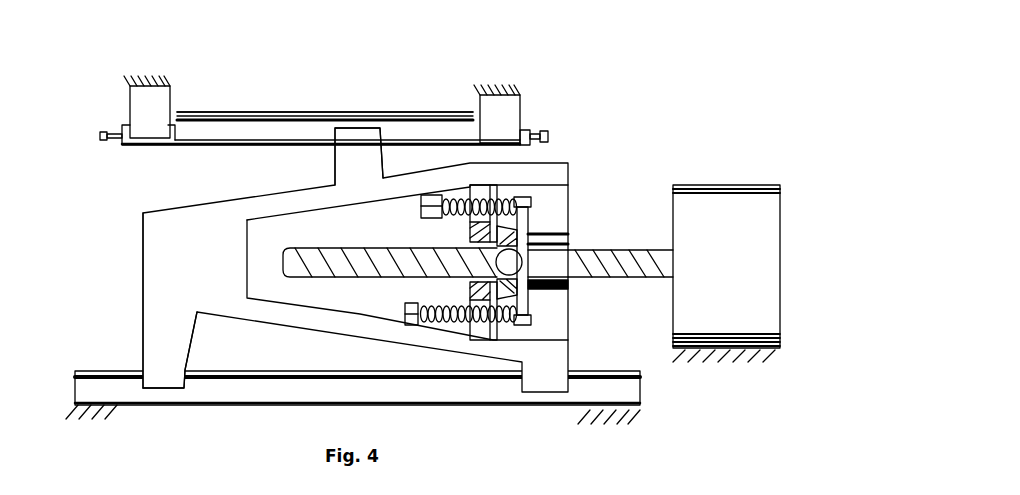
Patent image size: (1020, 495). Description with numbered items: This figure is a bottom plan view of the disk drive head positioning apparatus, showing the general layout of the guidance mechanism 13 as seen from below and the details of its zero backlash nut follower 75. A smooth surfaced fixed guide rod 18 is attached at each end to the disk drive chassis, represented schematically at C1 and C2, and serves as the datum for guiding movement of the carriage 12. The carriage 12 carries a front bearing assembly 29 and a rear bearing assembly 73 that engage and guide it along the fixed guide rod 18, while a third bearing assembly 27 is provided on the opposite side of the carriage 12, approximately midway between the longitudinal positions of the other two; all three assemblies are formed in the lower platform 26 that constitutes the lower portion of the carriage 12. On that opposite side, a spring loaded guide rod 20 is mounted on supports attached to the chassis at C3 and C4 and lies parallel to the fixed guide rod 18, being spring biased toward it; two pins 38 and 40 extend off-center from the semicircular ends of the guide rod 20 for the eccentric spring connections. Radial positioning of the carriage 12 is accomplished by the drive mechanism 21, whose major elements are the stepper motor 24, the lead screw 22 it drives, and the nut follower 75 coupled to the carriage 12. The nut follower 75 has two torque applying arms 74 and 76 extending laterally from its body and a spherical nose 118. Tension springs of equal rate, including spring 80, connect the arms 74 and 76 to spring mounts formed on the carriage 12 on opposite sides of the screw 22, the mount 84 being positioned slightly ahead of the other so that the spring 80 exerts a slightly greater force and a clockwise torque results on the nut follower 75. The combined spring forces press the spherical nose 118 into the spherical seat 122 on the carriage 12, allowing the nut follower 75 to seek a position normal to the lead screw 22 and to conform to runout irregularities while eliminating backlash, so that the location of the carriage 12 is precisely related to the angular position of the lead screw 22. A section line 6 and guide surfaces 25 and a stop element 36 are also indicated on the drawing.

The carriage 12 is at (203, 201).
The guidance mechanism 13 is at (93, 128).
The fixed guide rod 18 is at (287, 408).
The spring loaded guide rod 20 is at (226, 115).
The drive mechanism 21 is at (614, 279).
The lead screw 22 is at (590, 252).
The stepper motor 24 is at (715, 185).
The guide surface 25 is at (387, 107).
The platform 26 is at (143, 240).
The third bearing assembly 27 is at (330, 158).
The front bearing assembly 29 is at (143, 365).
The stop block 36 is at (533, 130).
The pin 38 is at (548, 139).
The pin 40 is at (112, 142).
The rear bearing assembly 73 is at (505, 207).
The torque applying arm 74 is at (531, 214).
The zero backlash nut follower 75 is at (548, 242).
The torque applying arm 76 is at (538, 313).
The tension spring 80 is at (445, 213).
The spring mount 84 is at (407, 312).
The spherical nose 118 is at (568, 290).
The spherical seat 122 is at (550, 238).
The section line 6- 6 is at (368, 107).
The chassis attachment point C1 is at (609, 428).
The chassis attachment point C2 is at (91, 425).
The chassis mounting point C3 is at (513, 80).
The chassis mounting point C4 is at (159, 72).